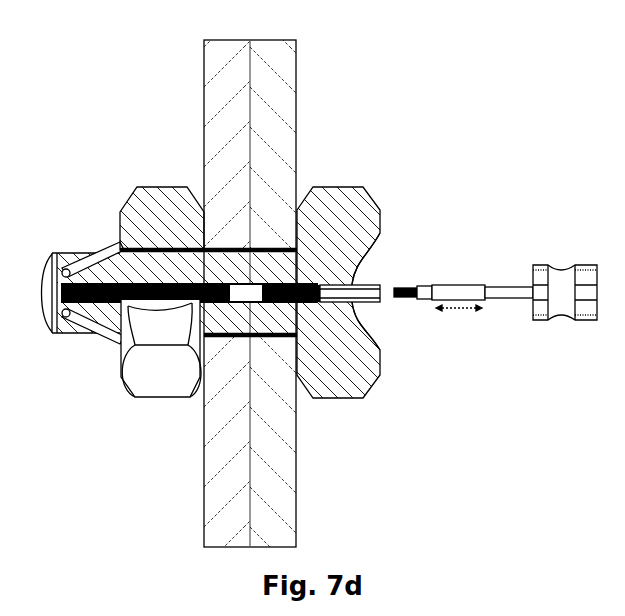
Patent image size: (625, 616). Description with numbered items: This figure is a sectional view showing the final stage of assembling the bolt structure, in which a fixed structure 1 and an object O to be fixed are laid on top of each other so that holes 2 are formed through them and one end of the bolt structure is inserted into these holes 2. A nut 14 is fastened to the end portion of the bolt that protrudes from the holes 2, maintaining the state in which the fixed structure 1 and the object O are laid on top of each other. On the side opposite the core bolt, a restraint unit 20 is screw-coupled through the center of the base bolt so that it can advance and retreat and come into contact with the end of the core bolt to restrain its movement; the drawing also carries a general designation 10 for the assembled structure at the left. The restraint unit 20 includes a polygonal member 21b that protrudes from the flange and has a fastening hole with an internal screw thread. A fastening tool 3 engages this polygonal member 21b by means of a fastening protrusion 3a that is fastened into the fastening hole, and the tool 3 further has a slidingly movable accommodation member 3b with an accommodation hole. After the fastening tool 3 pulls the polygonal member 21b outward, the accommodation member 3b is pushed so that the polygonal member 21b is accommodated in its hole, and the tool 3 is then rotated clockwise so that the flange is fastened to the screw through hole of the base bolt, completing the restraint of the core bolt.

The fixed structure 1 is at (222, 95).
The object to be fixed O is at (285, 97).
The anchor assembly 10 is at (64, 208).
The holes 2 is at (205, 268).
The nut 14 is at (163, 380).
The restraint unit 20 is at (392, 263).
The polygonal member 21b is at (383, 300).
The fastening tool 3 is at (563, 265).
The fastening protrusion 3a is at (409, 286).
The accommodation member 3b is at (472, 285).